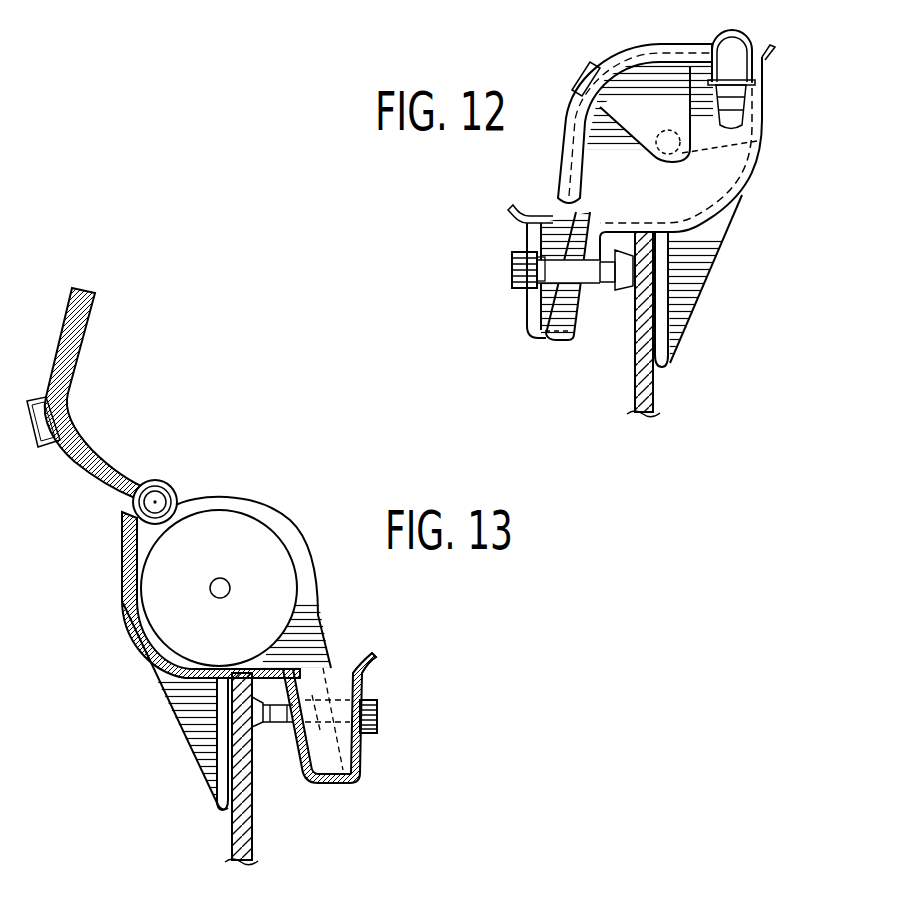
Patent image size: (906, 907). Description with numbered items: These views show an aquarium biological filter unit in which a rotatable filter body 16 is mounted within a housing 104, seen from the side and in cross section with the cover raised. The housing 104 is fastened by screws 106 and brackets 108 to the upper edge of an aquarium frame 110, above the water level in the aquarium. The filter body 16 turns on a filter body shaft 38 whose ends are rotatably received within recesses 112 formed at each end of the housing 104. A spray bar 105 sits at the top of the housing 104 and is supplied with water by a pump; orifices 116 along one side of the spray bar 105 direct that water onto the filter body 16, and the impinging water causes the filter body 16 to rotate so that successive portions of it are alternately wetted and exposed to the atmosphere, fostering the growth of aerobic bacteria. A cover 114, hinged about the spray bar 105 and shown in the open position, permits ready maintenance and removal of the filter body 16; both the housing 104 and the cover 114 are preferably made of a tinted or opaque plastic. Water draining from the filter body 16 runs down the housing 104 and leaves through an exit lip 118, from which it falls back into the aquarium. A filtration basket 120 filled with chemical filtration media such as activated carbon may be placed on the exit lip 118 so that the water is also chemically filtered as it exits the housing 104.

In FIG. 13, the filter body 16 is at (230, 528).
In FIG. 12, the filter body shaft 38 is at (760, 143).
In FIG. 13, the filter body shaft 38 is at (232, 588).
In FIG. 12, the housing 104 is at (713, 188).
In FIG. 13, the housing 104 is at (168, 660).
In FIG. 12, the spray bar 105 is at (750, 44).
In FIG. 13, the spray bar 105 is at (157, 482).
In FIG. 12, the screws 106 is at (517, 289).
In FIG. 13, the screws 106 is at (378, 718).
In FIG. 12, the brackets 108 is at (668, 302).
In FIG. 13, the brackets 108 is at (218, 755).
In FIG. 12, the aquarium frame 110 is at (655, 390).
In FIG. 13, the aquarium frame 110 is at (243, 830).
In FIG. 12, the recesses 112 is at (647, 138).
In FIG. 12, the cover 114 is at (628, 50).
In FIG. 13, the cover 114 is at (86, 335).
In FIG. 13, the orifices 116 is at (124, 532).
In FIG. 12, the exit lip 118 is at (558, 340).
In FIG. 13, the exit lip 118 is at (330, 784).
In FIG. 12, the filtration basket 120 is at (527, 235).
In FIG. 13, the filtration basket 120 is at (374, 668).